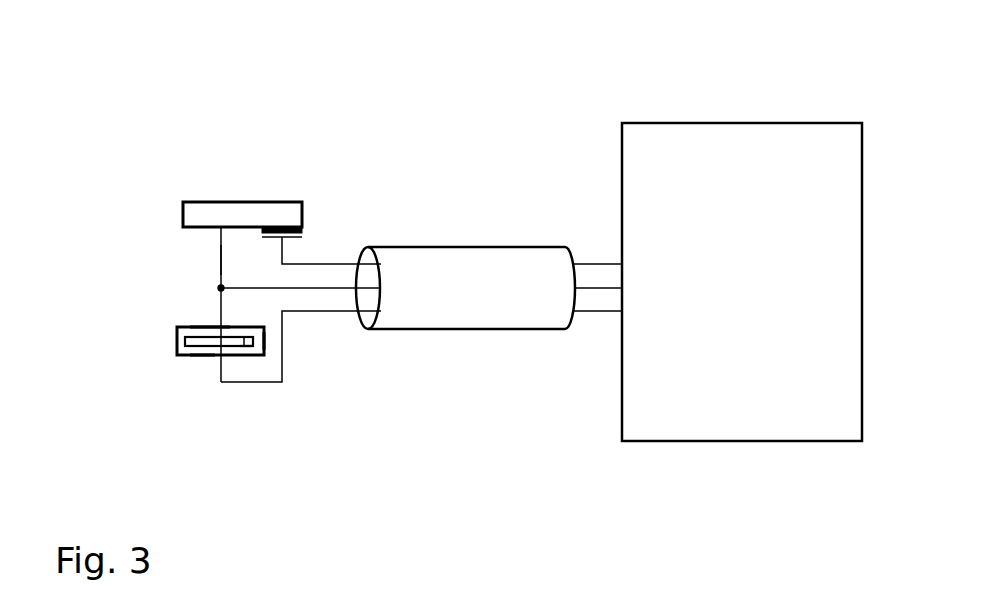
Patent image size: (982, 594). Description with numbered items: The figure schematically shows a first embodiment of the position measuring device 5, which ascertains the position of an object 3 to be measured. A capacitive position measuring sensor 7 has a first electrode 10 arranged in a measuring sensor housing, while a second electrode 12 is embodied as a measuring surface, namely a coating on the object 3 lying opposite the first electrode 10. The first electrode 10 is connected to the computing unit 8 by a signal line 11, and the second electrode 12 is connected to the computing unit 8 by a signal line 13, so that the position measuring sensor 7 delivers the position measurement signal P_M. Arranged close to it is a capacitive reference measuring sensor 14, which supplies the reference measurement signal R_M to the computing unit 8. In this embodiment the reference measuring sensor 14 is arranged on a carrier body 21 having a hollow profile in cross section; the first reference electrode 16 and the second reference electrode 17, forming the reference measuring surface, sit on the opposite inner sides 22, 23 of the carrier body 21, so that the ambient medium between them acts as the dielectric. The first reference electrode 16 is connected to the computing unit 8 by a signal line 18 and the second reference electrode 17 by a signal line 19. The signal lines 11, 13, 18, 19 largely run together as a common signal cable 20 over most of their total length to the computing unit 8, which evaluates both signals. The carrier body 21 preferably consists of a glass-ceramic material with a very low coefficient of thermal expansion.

The object to be measured 3 is at (183, 212).
The position measuring device 5 is at (540, 143).
The capacitive position measuring sensor 7 is at (250, 238).
The computing unit 8 is at (737, 122).
The first electrode 10 is at (295, 245).
The signal line 11 is at (348, 262).
The second electrode 12 is at (270, 228).
The signal line 13 is at (221, 259).
The capacitive reference measuring sensor 14 is at (195, 341).
The first reference electrode 16 is at (215, 347).
The second reference electrode 17 is at (207, 327).
The signal line 18 is at (348, 312).
The signal line 19 is at (219, 291).
The common signal cable 20 is at (467, 245).
The carrier body 21 is at (202, 368).
The inner side of the carrier body 22 is at (258, 337).
The inner side of the carrier body 23 is at (245, 347).